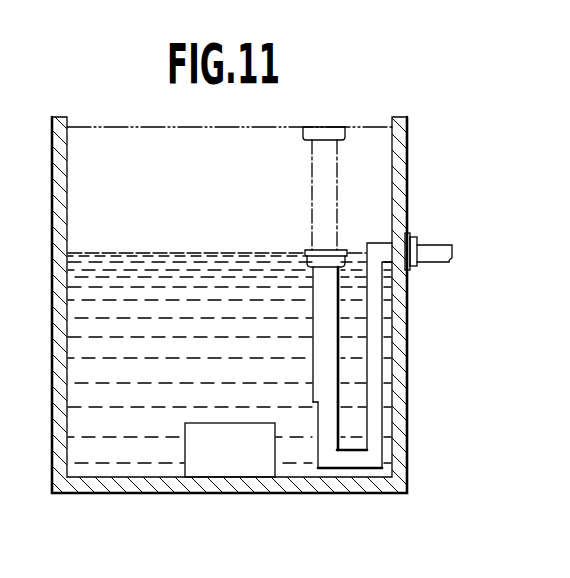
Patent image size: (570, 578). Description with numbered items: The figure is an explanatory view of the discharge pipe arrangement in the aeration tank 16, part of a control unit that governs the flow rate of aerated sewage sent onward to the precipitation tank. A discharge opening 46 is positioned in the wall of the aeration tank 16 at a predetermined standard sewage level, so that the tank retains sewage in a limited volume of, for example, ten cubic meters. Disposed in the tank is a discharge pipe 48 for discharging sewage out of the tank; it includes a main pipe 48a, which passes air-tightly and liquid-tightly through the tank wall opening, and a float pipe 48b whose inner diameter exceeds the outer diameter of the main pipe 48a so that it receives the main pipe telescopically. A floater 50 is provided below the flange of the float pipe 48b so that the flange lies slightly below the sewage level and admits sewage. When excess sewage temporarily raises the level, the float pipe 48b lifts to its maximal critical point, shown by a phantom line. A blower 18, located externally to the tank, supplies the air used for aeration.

The aeration tank 16 is at (58, 415).
The blower 18 is at (205, 470).
The discharge opening 46 is at (400, 229).
The discharge pipe 48 is at (343, 452).
The main pipe 48a is at (376, 458).
The float pipe 48b is at (321, 345).
The floater 50 is at (305, 262).